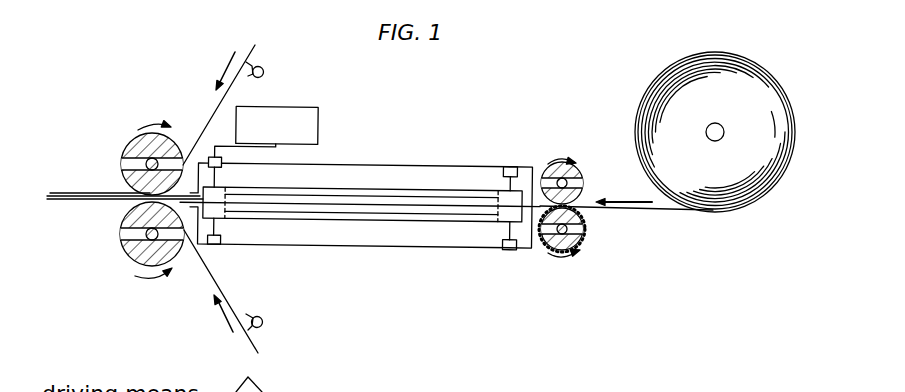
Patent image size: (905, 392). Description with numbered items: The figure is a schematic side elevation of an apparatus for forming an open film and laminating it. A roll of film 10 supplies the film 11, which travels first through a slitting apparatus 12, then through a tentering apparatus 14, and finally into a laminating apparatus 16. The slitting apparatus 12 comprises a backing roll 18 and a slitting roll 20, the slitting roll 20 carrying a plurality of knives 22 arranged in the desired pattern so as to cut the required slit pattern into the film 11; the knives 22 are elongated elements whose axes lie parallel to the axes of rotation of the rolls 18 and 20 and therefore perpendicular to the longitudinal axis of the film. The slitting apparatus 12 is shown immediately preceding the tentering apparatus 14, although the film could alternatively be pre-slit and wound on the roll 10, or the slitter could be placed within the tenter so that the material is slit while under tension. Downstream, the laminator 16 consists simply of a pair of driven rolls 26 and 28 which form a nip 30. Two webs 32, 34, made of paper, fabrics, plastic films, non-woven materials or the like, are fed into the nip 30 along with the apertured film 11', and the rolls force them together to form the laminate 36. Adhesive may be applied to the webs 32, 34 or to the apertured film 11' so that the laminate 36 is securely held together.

The roll of film 10 is at (658, 78).
The film 11 is at (626, 222).
The apertured film 11' is at (125, 168).
The slitting apparatus 12 is at (588, 202).
The tentering apparatus 14 is at (360, 197).
The laminating apparatus 16 is at (234, 101).
The backing roll 18 is at (584, 165).
The slitting roll 20 is at (582, 237).
The knives 22 is at (498, 246).
The driven roll 26 is at (137, 132).
The driven roll 28 is at (125, 247).
The nip 30 is at (120, 200).
The web 32 is at (270, 45).
The web 34 is at (259, 352).
The laminate 36 is at (75, 211).